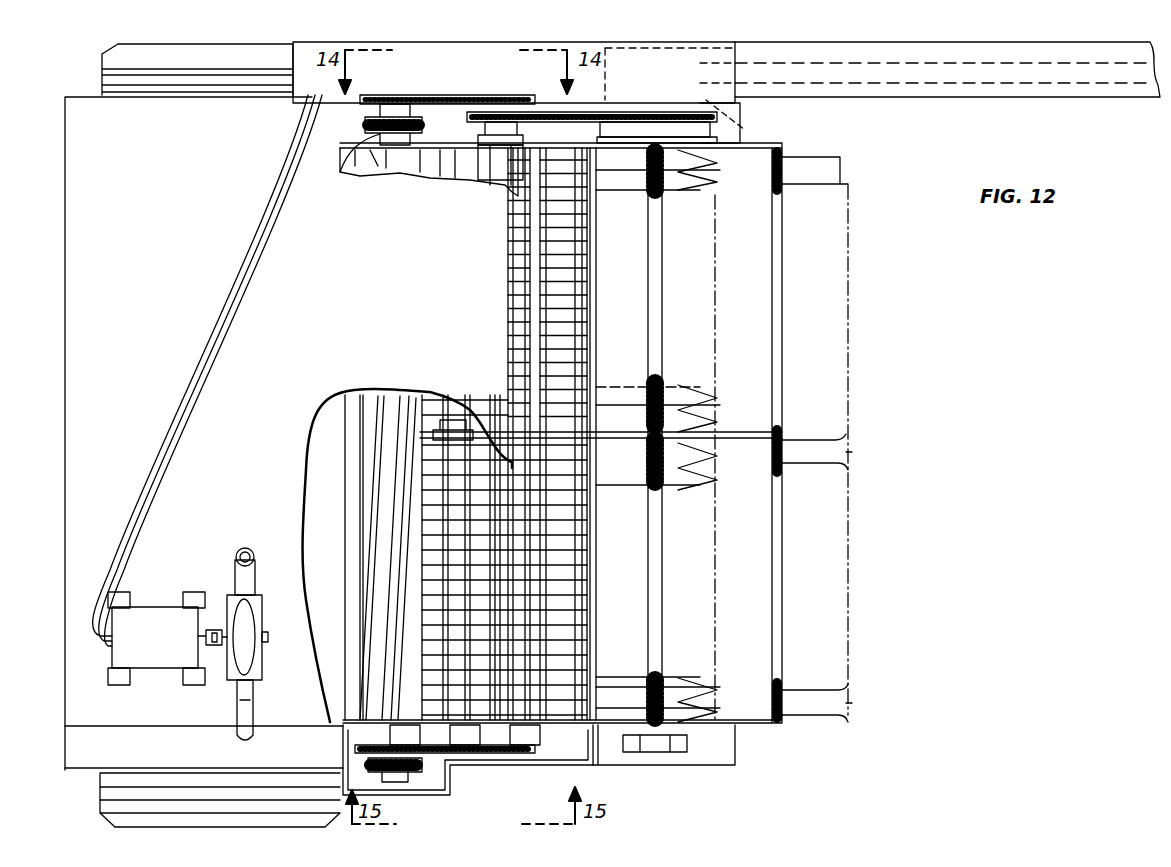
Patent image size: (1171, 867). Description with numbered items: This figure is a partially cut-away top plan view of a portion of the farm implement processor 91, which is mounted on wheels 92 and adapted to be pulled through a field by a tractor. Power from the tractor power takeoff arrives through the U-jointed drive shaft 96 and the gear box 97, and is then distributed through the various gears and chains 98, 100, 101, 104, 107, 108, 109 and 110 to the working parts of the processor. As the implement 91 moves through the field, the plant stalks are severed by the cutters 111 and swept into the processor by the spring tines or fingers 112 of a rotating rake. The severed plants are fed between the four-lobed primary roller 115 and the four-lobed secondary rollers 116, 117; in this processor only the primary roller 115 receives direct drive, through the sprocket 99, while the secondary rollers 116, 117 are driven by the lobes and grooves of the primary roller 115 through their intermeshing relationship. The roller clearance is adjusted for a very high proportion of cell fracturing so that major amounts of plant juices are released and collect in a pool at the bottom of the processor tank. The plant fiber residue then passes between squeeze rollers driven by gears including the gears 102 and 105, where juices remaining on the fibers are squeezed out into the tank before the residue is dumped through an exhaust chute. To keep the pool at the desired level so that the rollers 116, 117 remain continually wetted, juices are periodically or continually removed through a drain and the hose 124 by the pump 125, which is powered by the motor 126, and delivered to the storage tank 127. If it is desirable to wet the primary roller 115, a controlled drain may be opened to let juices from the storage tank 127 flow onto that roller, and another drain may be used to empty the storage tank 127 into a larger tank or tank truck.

The farm implement processor 91 is at (913, 524).
The wheels 92 is at (215, 84).
The U-jointed drive shaft 96 is at (1163, 98).
The gear box 97 is at (745, 126).
The gear or chain 98 is at (705, 135).
The sprocket 99 is at (484, 150).
The gear or chain 100 is at (490, 110).
The gear or chain 101 is at (418, 98).
The gear 102 is at (338, 166).
The gear or chain 104 is at (360, 740).
The gear 105 is at (422, 770).
The gear or chain 107 is at (534, 765).
The gear or chain 108 is at (592, 118).
The gear or chain 109 is at (445, 92).
The gear or chain 110 is at (466, 762).
The cutters 111 is at (700, 188).
The spring tines or fingers 112 is at (835, 163).
The primary roller 115 is at (512, 275).
The secondary roller 116 is at (575, 303).
The secondary roller 117 is at (440, 424).
The hose 124 is at (236, 713).
The pump 125 is at (240, 606).
The motor 126 is at (138, 680).
The storage tank 127 is at (166, 230).